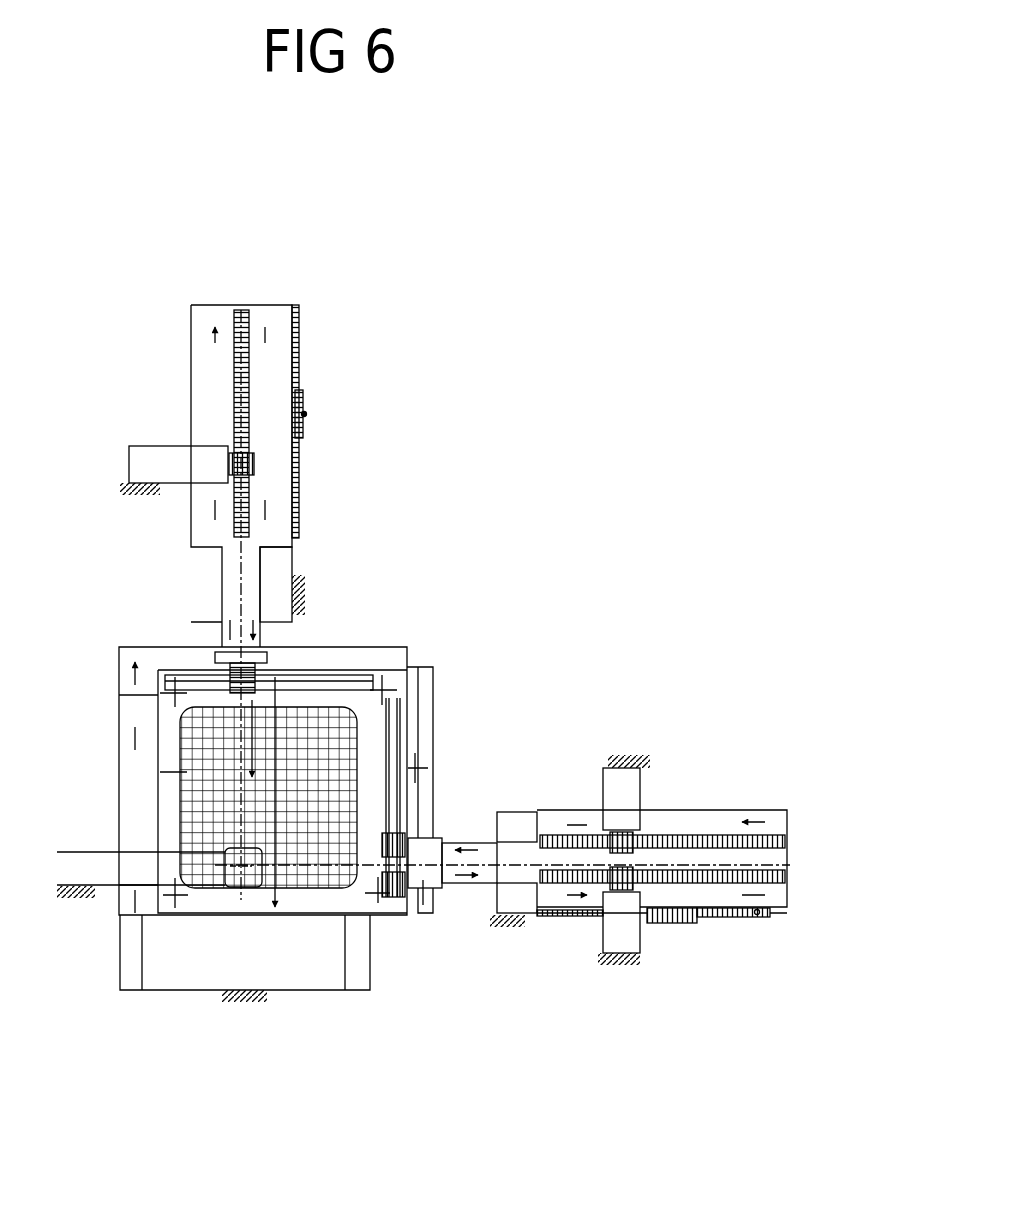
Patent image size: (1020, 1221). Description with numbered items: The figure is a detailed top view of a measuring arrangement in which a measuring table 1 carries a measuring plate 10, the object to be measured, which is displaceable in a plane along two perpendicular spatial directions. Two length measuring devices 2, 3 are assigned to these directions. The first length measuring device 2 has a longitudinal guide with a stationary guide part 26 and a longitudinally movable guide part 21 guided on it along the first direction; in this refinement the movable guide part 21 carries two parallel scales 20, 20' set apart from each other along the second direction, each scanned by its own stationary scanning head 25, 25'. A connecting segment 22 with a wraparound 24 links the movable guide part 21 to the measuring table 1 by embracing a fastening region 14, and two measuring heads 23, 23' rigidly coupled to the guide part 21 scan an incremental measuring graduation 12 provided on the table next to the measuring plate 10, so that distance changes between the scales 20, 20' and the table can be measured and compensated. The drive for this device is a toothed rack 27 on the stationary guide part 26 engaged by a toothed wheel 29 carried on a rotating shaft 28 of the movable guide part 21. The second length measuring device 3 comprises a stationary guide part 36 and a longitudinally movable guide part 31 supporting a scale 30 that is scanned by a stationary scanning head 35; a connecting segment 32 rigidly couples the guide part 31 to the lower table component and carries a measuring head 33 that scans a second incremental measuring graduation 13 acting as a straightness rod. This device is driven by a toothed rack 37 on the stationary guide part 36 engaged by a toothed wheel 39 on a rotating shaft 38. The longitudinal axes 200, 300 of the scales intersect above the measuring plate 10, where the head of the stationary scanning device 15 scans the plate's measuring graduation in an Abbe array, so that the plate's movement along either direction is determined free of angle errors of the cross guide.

The measuring table 1 is at (118, 713).
The length measuring device 2 is at (797, 834).
The length measuring device 3 is at (313, 315).
The measuring plate 10 is at (197, 824).
The incremental measuring graduation 12 is at (400, 737).
The incremental measuring graduation 13 is at (187, 678).
The fastening region 14 is at (428, 690).
The scanning device 15 is at (232, 878).
The scale 20 is at (718, 801).
The scale 20' is at (721, 906).
The longitudinally movable guide part 21 is at (557, 818).
The connecting segment 22 is at (488, 878).
The measuring head 23 is at (443, 793).
The measuring head 23' is at (380, 973).
The wraparound 24 is at (422, 915).
The scanning head 25 is at (661, 783).
The scanning head 25' is at (597, 958).
The stationary guide part 26 is at (512, 822).
The toothed rack 27 is at (760, 915).
The rotating shaft 28 is at (673, 923).
The toothed wheel 29 is at (697, 920).
The scale 30 is at (243, 407).
The longitudinally movable guide part 31 is at (210, 353).
The connecting segment 32 is at (300, 580).
The measuring head 33 is at (255, 654).
The scanning head 35 is at (227, 468).
The stationary guide part 36 is at (283, 560).
The toothed rack 37 is at (300, 340).
The rotating shaft 38 is at (305, 414).
The toothed wheel 39 is at (303, 392).
The longitudinal axis 200 is at (525, 862).
The longitudinal axis 300 is at (232, 577).